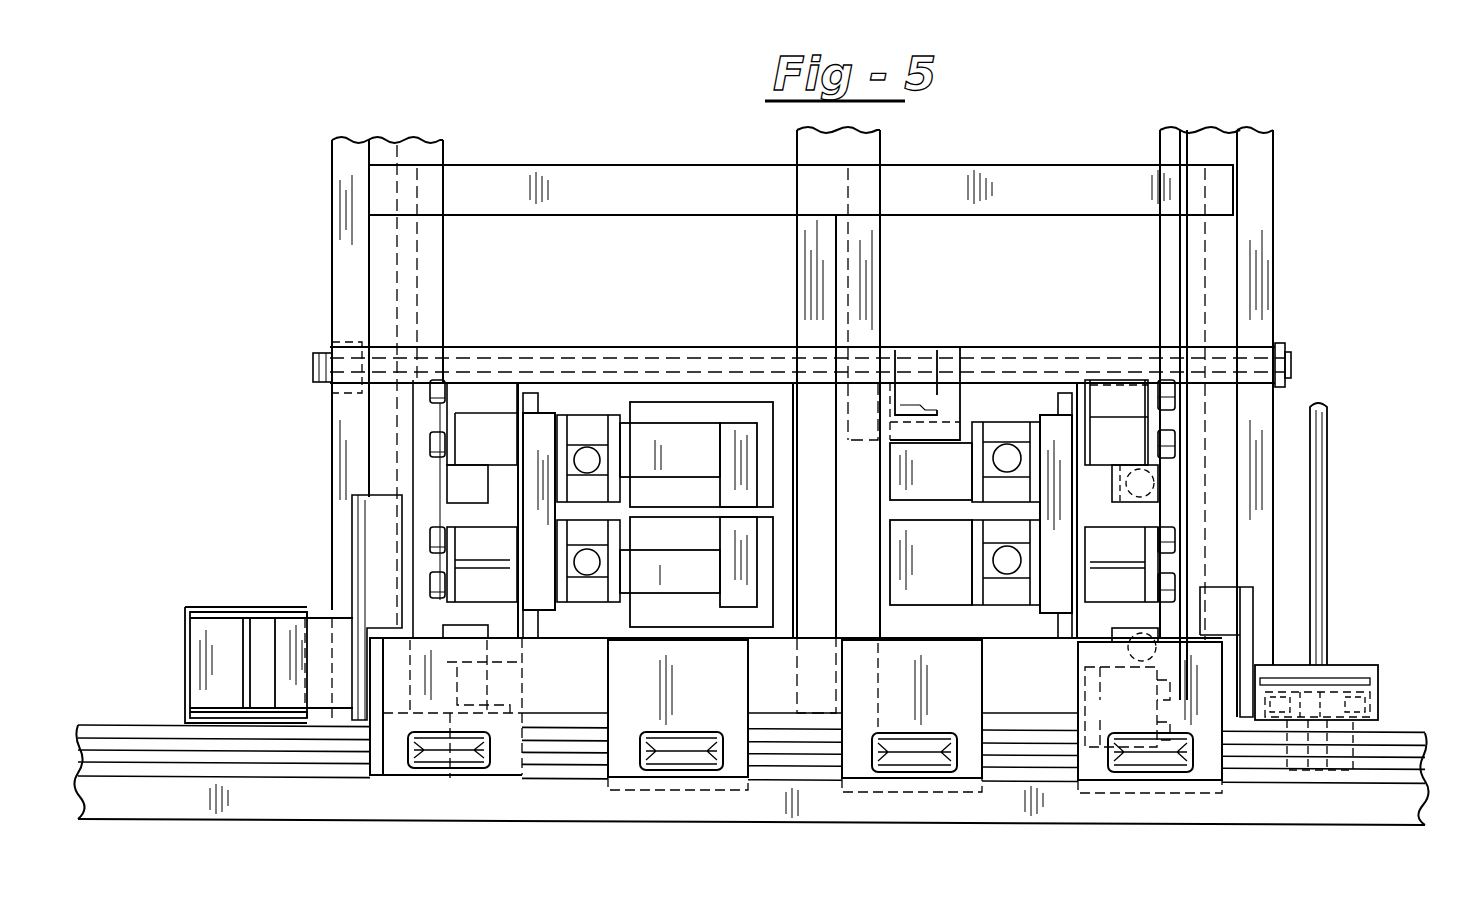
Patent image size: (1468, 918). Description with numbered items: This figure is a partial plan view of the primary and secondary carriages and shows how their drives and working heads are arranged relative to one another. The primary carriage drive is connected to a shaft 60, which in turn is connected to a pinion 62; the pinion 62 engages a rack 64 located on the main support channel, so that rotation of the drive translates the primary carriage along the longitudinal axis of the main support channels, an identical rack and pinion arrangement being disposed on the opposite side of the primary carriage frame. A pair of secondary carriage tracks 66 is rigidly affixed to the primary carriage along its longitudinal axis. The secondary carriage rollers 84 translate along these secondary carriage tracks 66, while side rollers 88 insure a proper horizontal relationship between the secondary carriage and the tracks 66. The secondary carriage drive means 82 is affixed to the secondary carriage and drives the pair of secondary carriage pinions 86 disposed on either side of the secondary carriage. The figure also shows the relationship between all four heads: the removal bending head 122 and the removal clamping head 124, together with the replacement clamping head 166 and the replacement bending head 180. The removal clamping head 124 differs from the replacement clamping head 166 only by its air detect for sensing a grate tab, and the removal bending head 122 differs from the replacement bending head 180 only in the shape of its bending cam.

The shaft 60 is at (1322, 462).
The pinion 62 is at (1335, 733).
The rack 64 is at (1363, 758).
The secondary carriage tracks 66 is at (1178, 302).
The secondary carriage drive means 82 is at (922, 410).
The secondary carriage rollers 84 is at (1178, 441).
The secondary carriage pinions 86 is at (316, 354).
The side rollers 88 is at (1178, 492).
The removal bending head 122 is at (957, 575).
The removal clamping head 124 is at (588, 656).
The replacement clamping head 166 is at (656, 492).
The replacement bending head 180 is at (960, 490).